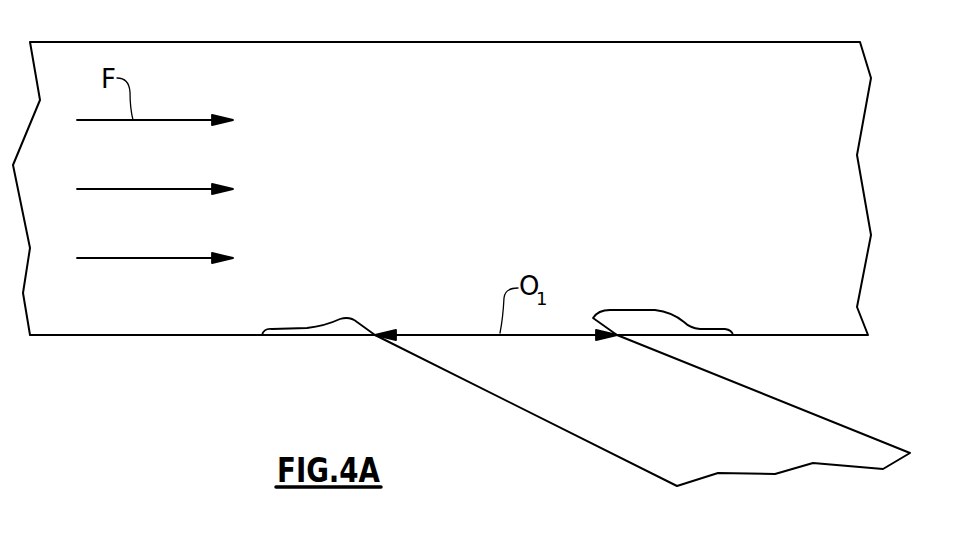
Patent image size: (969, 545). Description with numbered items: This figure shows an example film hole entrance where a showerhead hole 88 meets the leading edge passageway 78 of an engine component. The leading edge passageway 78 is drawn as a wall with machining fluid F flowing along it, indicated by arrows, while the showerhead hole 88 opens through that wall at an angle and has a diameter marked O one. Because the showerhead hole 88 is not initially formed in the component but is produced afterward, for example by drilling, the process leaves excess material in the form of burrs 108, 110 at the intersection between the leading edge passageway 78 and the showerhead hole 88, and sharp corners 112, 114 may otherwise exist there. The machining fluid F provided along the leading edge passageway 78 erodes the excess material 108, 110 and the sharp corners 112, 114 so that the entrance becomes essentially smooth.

The leading edge passageway 78 is at (649, 186).
The showerhead hole 88 is at (702, 438).
The excess material 108 is at (347, 328).
The excess material 110 is at (645, 327).
The sharp corner 112 is at (375, 333).
The sharp corner 114 is at (615, 336).